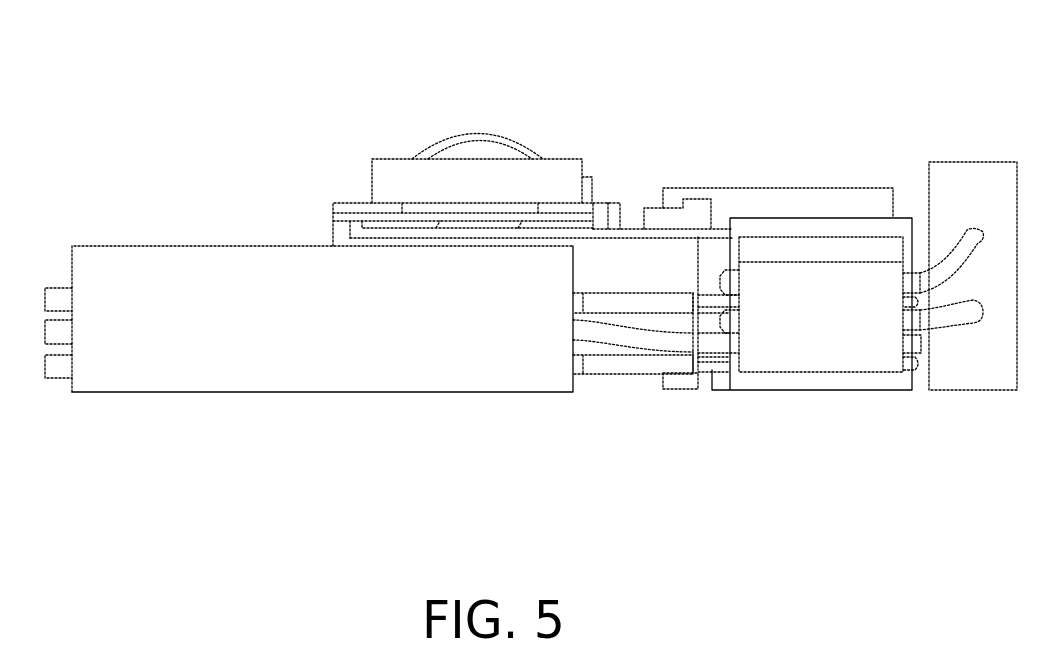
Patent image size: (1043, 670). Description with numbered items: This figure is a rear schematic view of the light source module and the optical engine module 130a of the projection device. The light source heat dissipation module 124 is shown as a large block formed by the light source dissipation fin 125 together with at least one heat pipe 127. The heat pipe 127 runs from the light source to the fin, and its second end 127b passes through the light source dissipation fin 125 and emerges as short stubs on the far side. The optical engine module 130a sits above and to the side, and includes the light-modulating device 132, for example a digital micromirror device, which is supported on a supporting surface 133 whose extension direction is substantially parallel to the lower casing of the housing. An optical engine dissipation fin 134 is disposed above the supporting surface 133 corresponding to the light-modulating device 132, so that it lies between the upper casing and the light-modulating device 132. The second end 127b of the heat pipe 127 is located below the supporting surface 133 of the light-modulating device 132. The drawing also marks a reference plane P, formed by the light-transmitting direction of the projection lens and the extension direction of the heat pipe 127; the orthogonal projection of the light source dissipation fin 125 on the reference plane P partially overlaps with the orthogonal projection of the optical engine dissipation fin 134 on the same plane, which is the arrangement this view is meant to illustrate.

The reference plane P is at (180, 72).
The light source heat dissipation module 124 is at (623, 453).
The light source dissipation fin 125 is at (525, 380).
The heat pipe 127 is at (622, 370).
The second end 127b is at (58, 298).
The optical engine module 130a is at (488, 72).
The light-modulating device 132 is at (478, 223).
The supporting surface 133 is at (388, 227).
The optical engine dissipation fin 134 is at (401, 172).